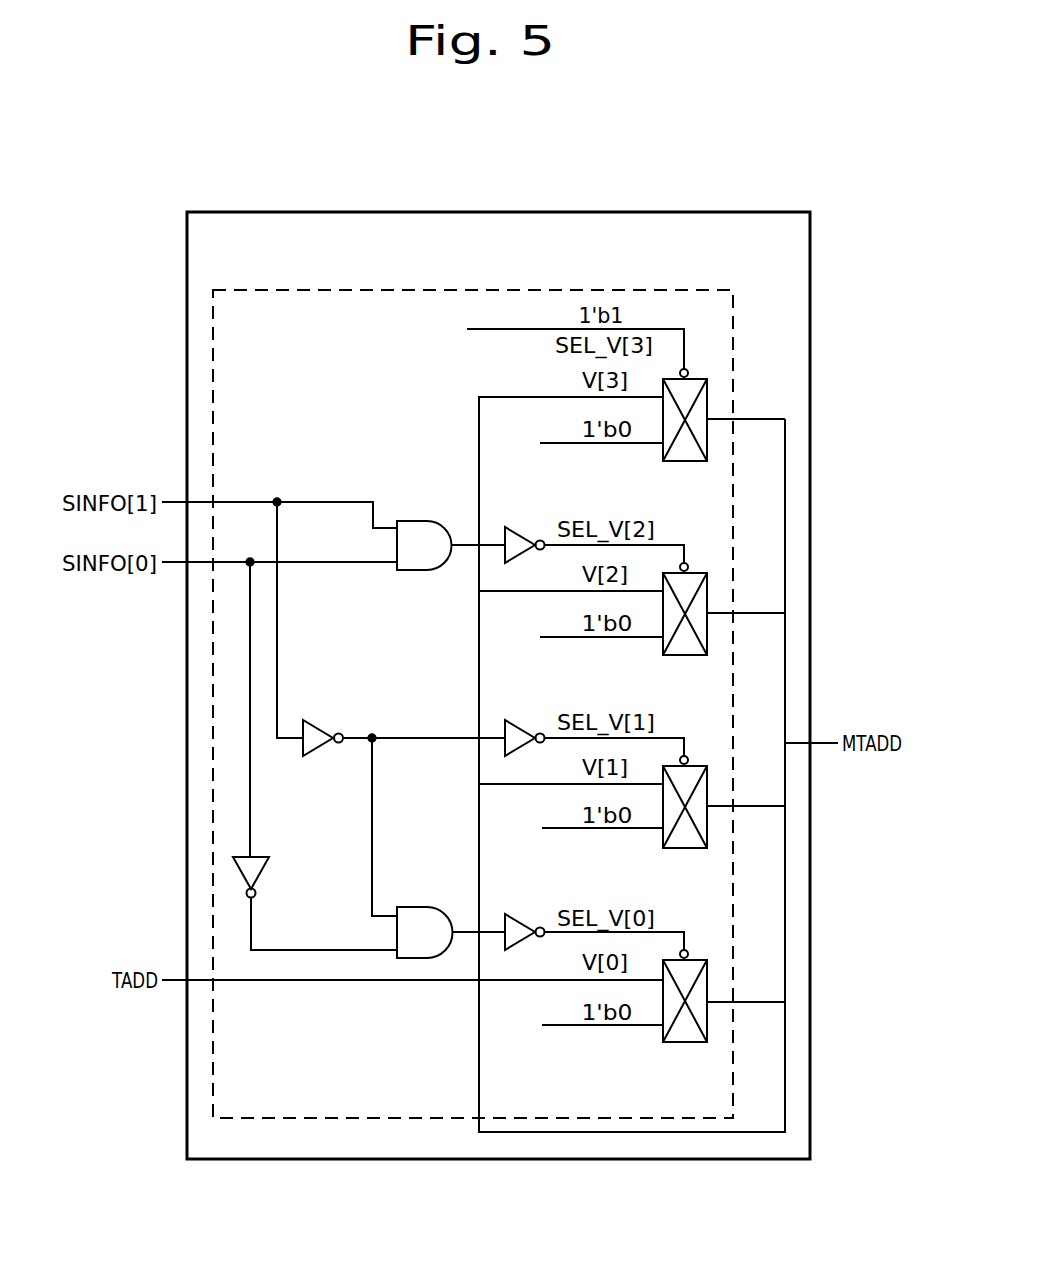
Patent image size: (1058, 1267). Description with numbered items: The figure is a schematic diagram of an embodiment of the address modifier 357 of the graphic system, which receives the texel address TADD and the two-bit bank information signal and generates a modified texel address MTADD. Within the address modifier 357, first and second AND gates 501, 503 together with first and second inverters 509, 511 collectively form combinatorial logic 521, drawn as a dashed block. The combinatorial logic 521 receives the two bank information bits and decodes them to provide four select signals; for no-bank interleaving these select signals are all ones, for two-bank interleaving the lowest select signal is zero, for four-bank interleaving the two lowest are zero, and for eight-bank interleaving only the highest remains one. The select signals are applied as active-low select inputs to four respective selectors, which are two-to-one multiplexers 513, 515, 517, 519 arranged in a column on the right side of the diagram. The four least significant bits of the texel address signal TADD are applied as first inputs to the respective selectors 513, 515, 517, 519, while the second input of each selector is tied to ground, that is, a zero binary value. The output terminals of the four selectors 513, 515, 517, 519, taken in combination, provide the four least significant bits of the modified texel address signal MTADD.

The address modifier 357 is at (735, 212).
The combinatorial logic 521 is at (350, 290).
The first AND gate 501 is at (412, 521).
The second AND gate 503 is at (412, 907).
The first inverter 509 is at (320, 720).
The second inverter 511 is at (262, 872).
The first selector 513 is at (685, 461).
The second selector 515 is at (685, 655).
The third selector 517 is at (685, 848).
The fourth selector 519 is at (685, 1042).